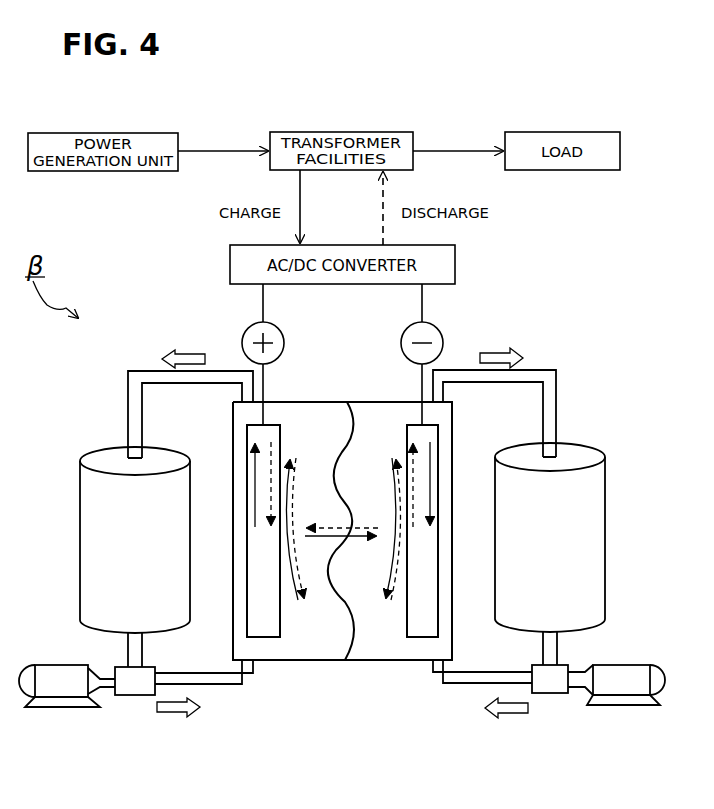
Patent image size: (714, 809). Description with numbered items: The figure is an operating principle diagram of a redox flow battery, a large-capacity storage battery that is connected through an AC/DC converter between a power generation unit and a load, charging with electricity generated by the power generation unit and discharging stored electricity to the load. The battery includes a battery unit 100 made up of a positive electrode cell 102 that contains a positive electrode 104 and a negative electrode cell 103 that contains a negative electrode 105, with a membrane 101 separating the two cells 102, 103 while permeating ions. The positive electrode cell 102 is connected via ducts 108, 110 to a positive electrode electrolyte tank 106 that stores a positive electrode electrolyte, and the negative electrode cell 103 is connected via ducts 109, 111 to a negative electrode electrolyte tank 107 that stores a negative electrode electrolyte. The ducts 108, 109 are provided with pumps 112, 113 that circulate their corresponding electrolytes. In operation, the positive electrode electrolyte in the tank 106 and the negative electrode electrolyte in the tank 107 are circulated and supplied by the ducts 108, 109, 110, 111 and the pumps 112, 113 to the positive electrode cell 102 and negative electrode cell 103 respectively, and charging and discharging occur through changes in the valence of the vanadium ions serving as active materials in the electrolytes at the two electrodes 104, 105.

The battery unit 100 is at (343, 592).
The membrane 101 is at (350, 650).
The positive electrode cell 102 is at (262, 566).
The negative electrode cell 103 is at (428, 566).
The positive electrode 104 is at (247, 618).
The negative electrode 105 is at (440, 615).
The positive electrode electrolyte tank 106 is at (95, 447).
The negative electrode electrolyte tank 107 is at (590, 444).
The duct 108 is at (225, 686).
The duct 109 is at (463, 685).
The duct 110 is at (145, 370).
The duct 111 is at (542, 370).
The pump 112 is at (45, 665).
The pump 113 is at (640, 664).